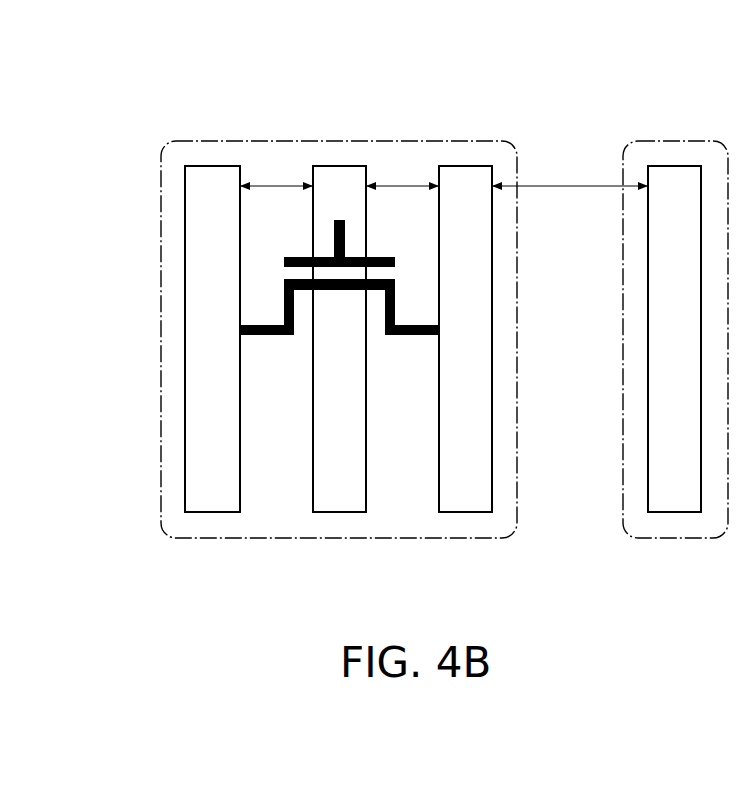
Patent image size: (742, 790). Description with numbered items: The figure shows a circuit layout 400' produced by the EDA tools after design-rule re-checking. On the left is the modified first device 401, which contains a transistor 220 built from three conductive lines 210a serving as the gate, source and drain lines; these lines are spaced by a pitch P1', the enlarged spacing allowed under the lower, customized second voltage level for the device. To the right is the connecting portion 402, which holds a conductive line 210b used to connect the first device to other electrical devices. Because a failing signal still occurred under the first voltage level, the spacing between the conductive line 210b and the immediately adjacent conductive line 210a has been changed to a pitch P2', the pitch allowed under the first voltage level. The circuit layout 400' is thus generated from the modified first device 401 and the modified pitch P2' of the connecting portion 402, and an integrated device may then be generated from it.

The circuit layout 400' is at (389, 314).
The modified first device 401 is at (338, 540).
The connecting portion 402 is at (675, 540).
The conductive lines 210a is at (439, 412).
The conductive line 210b is at (675, 166).
The transistor 220 is at (284, 280).
The pitch P1' is at (339, 129).
The pitch P2' is at (570, 129).